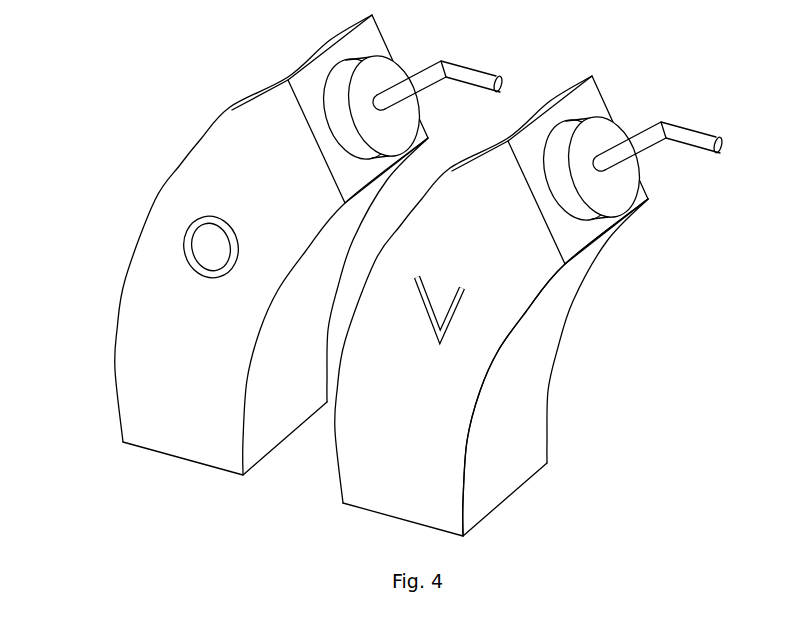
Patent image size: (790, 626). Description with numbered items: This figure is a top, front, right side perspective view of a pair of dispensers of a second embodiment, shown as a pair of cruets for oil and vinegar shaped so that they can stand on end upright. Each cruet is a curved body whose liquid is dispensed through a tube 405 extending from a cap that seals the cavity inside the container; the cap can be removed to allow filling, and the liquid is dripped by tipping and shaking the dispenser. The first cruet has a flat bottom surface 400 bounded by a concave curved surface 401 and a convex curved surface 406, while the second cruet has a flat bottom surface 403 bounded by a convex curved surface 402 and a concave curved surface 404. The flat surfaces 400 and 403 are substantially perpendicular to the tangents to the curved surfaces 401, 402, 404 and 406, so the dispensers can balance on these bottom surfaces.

The flat surface 400 is at (269, 266).
The curved surface 401 is at (258, 440).
The curved surface 402 is at (499, 306).
The flat surface 403 is at (397, 515).
The curved surface 404 is at (478, 487).
The tube 405 is at (643, 142).
The curved surface 406 is at (117, 387).